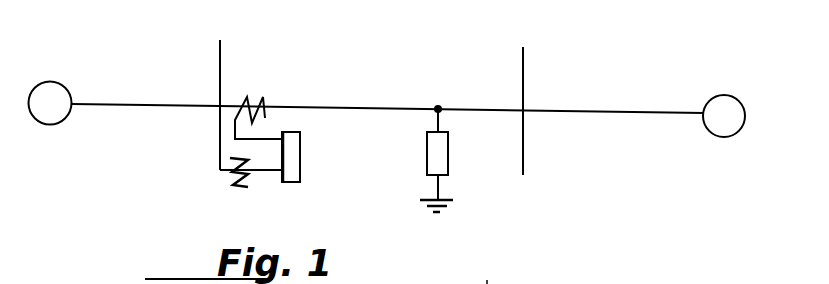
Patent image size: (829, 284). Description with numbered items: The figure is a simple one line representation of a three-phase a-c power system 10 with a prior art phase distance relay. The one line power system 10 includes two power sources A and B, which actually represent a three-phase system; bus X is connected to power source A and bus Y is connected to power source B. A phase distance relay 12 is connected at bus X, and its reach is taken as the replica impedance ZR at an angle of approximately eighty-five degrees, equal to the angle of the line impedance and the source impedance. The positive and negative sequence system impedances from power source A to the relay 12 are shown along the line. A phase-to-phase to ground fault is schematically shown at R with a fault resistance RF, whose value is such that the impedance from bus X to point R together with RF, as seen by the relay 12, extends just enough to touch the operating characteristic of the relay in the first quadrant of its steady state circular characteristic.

The a-c power system 10 is at (168, 187).
The phase distance relay 12 is at (288, 168).
The power source A is at (50, 103).
The power source B is at (724, 116).
The fault point R is at (439, 94).
The fault resistance RF is at (448, 157).
The replica impedance ZR is at (300, 156).